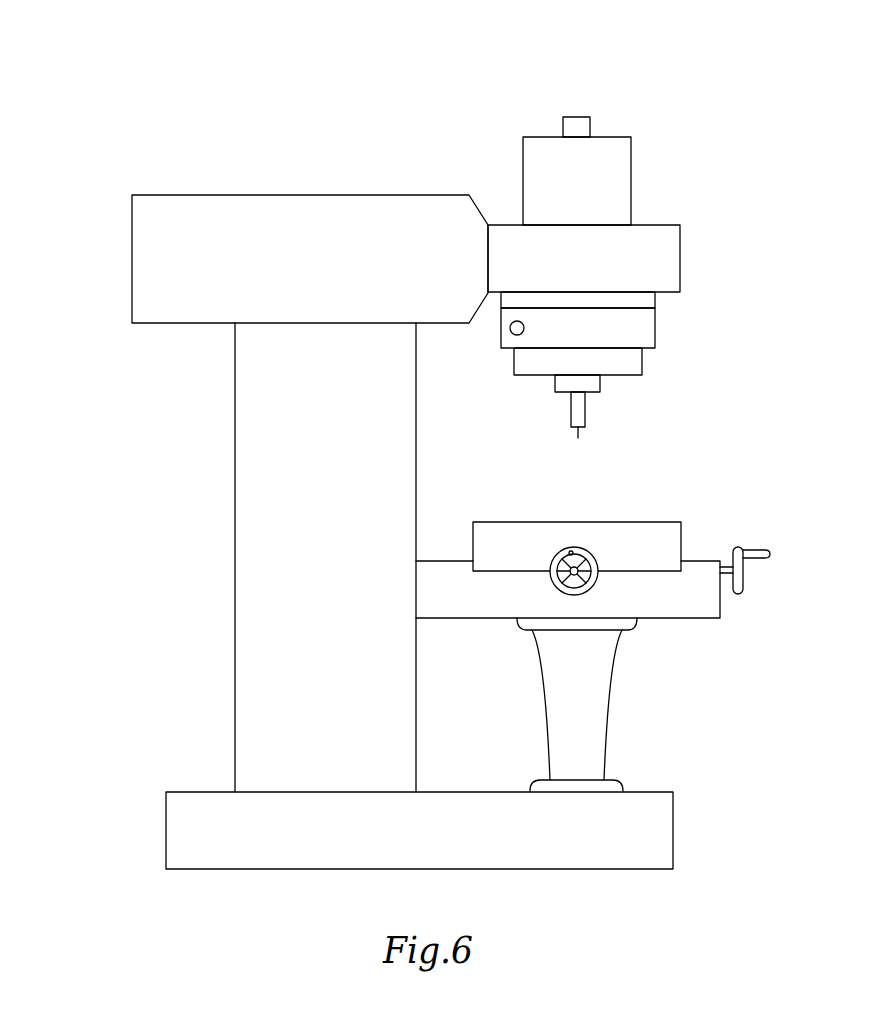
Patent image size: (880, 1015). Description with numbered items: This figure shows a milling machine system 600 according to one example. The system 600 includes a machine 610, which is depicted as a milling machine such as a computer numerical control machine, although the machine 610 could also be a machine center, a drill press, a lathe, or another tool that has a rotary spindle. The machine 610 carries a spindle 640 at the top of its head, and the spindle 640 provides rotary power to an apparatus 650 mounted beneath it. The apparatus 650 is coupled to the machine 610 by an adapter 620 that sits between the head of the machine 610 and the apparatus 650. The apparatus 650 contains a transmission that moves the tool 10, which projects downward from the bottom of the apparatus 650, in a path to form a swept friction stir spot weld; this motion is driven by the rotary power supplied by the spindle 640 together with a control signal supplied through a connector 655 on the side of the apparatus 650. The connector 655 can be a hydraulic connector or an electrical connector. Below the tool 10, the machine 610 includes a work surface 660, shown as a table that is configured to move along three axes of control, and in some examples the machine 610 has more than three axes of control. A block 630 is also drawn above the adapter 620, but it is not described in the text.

The system 600 is at (100, 32).
The machine 610 is at (234, 557).
The adapter 620 is at (655, 298).
The motor 630 is at (632, 182).
The spindle 640 is at (577, 116).
The apparatus 650 is at (655, 331).
The connector 655 is at (518, 335).
The tool 10 is at (586, 407).
The work surface 660 is at (682, 528).